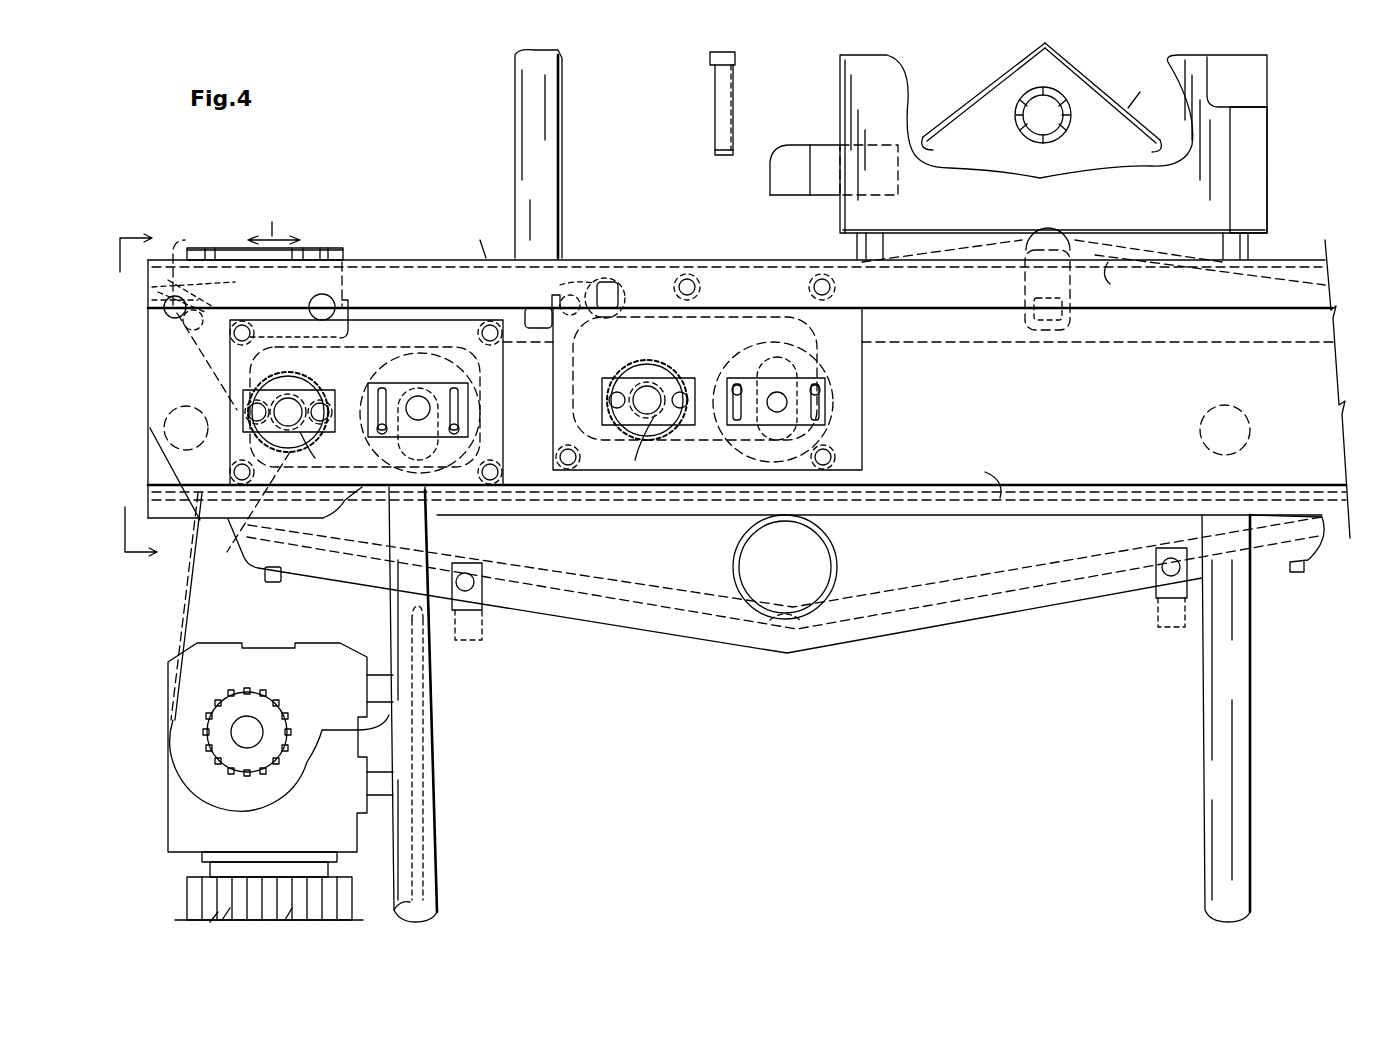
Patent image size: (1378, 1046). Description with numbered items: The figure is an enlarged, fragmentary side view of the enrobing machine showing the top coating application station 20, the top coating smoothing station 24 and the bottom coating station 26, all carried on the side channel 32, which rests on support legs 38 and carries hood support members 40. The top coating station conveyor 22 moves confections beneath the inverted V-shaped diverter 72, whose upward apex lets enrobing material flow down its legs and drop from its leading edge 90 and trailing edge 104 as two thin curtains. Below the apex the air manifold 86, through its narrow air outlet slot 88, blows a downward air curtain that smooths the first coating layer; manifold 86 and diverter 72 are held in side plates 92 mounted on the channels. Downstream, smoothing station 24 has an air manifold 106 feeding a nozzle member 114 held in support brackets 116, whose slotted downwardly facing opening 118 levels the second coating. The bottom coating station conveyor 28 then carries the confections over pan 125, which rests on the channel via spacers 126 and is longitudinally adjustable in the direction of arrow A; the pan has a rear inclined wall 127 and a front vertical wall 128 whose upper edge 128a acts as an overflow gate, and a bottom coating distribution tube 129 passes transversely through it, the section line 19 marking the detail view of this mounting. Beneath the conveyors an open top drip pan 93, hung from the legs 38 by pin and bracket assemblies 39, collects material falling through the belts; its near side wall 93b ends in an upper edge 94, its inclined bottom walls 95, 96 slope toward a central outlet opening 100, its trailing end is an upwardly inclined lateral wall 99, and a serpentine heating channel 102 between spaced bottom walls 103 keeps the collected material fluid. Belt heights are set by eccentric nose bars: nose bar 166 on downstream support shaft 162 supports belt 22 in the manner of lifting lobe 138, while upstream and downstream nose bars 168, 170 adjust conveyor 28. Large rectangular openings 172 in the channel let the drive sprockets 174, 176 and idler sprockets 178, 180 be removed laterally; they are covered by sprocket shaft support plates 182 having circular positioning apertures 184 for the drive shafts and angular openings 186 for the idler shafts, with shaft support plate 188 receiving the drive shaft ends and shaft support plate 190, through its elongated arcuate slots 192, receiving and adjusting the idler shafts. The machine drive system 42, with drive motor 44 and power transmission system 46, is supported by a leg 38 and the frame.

The top coating application station 20 is at (1284, 95).
The top coating station conveyor 22 is at (1210, 273).
The top coating smoothing station 24 is at (680, 139).
The bottom coating station 26 is at (988, 88).
The bottom coating station conveyor 28 is at (811, 164).
The side channel 32 is at (1330, 372).
The support legs 38 is at (437, 828).
The pin and bracket assemblies 39 is at (1149, 610).
The hood support members 40 is at (562, 74).
The machine drive system 42 is at (161, 647).
The drive motor 44 is at (188, 906).
The power transmission system 46 is at (172, 826).
The inverted V-shaped diverter 72 is at (1082, 80).
The air manifold 86 is at (1071, 120).
The air outlet slot 88 is at (1043, 143).
The leading edge 90 is at (1136, 148).
The side plates 92 is at (1250, 205).
The drip pan 93 is at (868, 662).
The near side wall 93b is at (640, 543).
The upper edge 94 is at (374, 488).
The inclined bottom wall 95 is at (1070, 556).
The inclined bottom wall 96 is at (598, 588).
The upwardly inclined lateral wall 99 is at (160, 468).
The central outlet opening 100 is at (838, 575).
The serpentine heating channel 102 is at (990, 625).
The spaced bottom walls 103 is at (1040, 600).
The trailing edge 104 is at (952, 147).
The air manifold 106 is at (735, 58).
The nozzle member 114 is at (733, 108).
The support brackets 116 is at (790, 188).
The slotted downwardly facing opening 118 is at (716, 156).
The pan 125 is at (325, 250).
The spacers 126 is at (212, 250).
The rear inclined wall 127 is at (221, 289).
The front vertical wall 128 is at (348, 332).
The upper edge 128a is at (345, 300).
The bottom coating distribution tube 129 is at (310, 302).
The lifting lobe 138 is at (1035, 258).
The downstream support shaft 162 is at (600, 312).
The nose bar 166 is at (596, 282).
The upstream nose bar 168 is at (525, 305).
The downstream nose bar 170 is at (178, 250).
The rectangular openings 172 is at (265, 518).
The top coating station conveyor belt drive sprocket 174 is at (622, 392).
The bottom coating station conveyor belt drive sprocket 176 is at (300, 385).
The idler sprocket 178 is at (820, 360).
The idler sprocket 180 is at (495, 360).
The sprocket shaft support plates 182 is at (462, 472).
The positioning apertures 184 is at (325, 395).
The openings 186 is at (440, 446).
The shaft support plate 188 is at (477, 443).
The shaft support plate 190 is at (468, 410).
The elongated arcuate slots 192 is at (405, 398).
The section line 19 is at (132, 395).
The direction arrow A is at (274, 221).